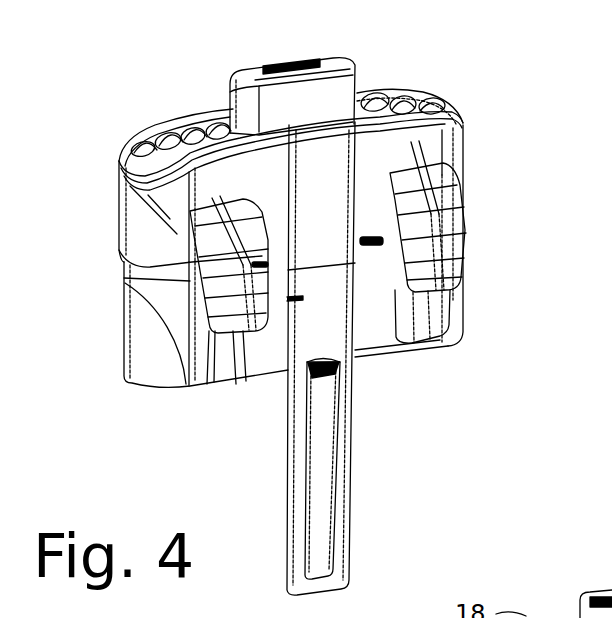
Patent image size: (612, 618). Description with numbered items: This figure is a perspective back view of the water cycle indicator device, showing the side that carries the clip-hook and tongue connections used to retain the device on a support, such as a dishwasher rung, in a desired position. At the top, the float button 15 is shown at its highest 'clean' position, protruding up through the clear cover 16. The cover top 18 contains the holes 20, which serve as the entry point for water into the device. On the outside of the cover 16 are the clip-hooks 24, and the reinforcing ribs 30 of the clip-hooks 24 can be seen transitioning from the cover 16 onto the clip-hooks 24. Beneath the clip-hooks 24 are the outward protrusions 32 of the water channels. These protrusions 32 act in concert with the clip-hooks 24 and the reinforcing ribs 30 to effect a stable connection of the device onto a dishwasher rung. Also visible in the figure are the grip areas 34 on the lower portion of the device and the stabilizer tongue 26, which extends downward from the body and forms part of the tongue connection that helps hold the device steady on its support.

The float button 15 is at (352, 64).
The clear cover 16 is at (465, 130).
The cover top 18 is at (158, 134).
The holes 20 is at (435, 97).
The clip-hooks 24 is at (464, 227).
The stabilizer tongue 26 is at (350, 458).
The reinforcing ribs 30 is at (420, 157).
The outward protrusions 32 is at (420, 306).
The grip areas 34 is at (140, 358).